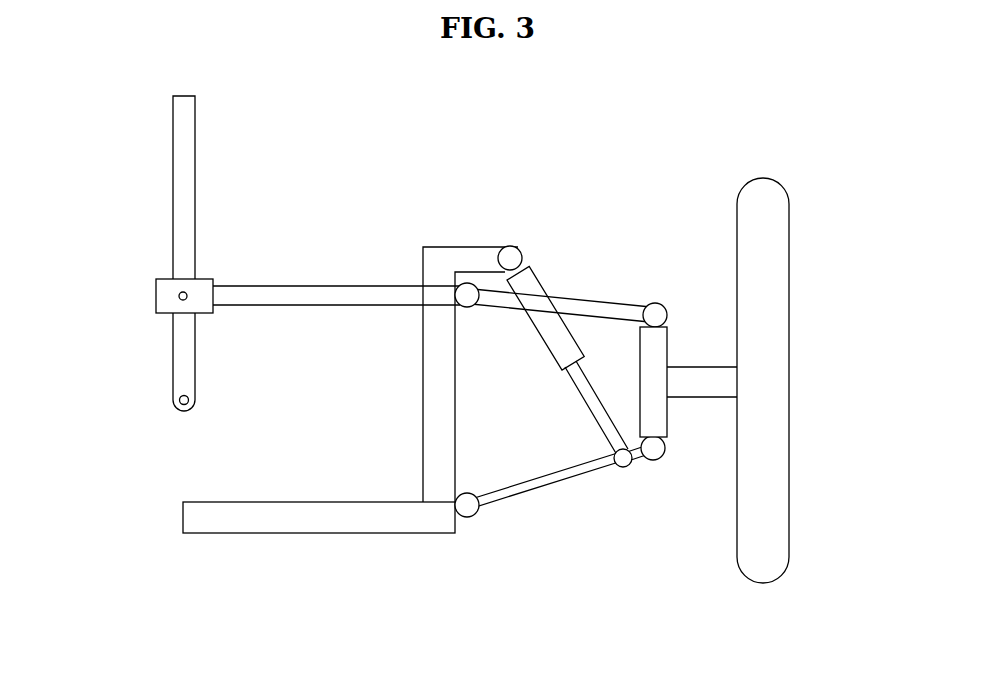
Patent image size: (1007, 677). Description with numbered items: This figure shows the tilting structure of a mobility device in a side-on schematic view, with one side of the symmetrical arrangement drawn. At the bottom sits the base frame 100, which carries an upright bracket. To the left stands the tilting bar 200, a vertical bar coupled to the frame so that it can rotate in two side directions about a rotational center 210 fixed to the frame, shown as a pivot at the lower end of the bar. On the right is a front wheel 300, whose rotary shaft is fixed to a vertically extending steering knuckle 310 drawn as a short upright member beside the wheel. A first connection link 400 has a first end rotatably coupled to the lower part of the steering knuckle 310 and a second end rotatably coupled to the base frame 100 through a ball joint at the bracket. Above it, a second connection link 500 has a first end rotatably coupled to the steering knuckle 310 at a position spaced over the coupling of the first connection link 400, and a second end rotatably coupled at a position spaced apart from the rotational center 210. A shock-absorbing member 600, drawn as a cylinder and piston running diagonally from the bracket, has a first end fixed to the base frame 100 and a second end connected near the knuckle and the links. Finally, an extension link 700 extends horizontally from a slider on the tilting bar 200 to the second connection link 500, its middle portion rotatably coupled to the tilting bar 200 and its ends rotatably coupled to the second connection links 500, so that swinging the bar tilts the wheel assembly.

The base frame 100 is at (316, 528).
The tilting bar 200 is at (180, 135).
The rotational center 210 is at (175, 402).
The front wheel 300 is at (776, 298).
The steering knuckle 310 is at (657, 414).
The first connection link 400 is at (547, 480).
The second connection link 500 is at (597, 298).
The shock-absorbing member 600 is at (543, 275).
The extension link 700 is at (299, 283).